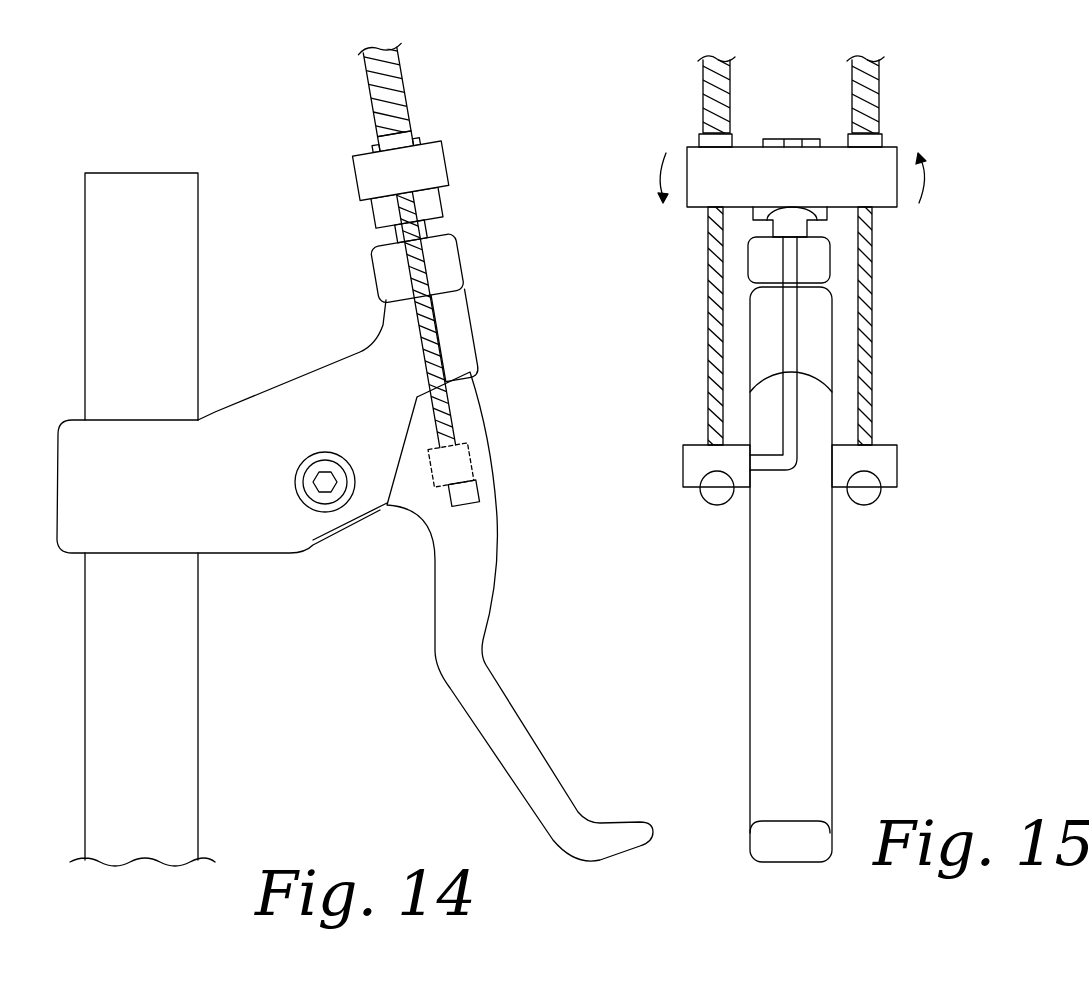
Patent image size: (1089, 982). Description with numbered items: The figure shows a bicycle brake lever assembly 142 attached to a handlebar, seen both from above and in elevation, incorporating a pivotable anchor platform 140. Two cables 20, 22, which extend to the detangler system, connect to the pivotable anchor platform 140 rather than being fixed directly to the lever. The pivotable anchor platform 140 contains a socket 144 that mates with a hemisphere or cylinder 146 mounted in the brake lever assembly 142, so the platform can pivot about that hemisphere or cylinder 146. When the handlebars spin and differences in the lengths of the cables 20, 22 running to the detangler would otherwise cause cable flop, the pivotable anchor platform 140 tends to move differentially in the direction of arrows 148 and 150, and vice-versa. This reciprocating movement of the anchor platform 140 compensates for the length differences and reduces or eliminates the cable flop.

In FIG. 14, the cable 20 is at (398, 72).
In FIG. 15, the cable 20 is at (710, 105).
In FIG. 15, the cable 22 is at (873, 103).
In FIG. 14, the pivotable anchor platform 140 is at (445, 158).
In FIG. 15, the pivotable anchor platform 140 is at (842, 158).
In FIG. 14, the brake lever assembly 142 is at (348, 298).
In FIG. 15, the brake lever assembly 142 is at (688, 220).
In FIG. 15, the socket 144 is at (828, 212).
In FIG. 15, the hemisphere or cylinder 146 is at (808, 230).
In FIG. 15, the arrow 148 is at (641, 178).
In FIG. 15, the arrow 150 is at (943, 178).